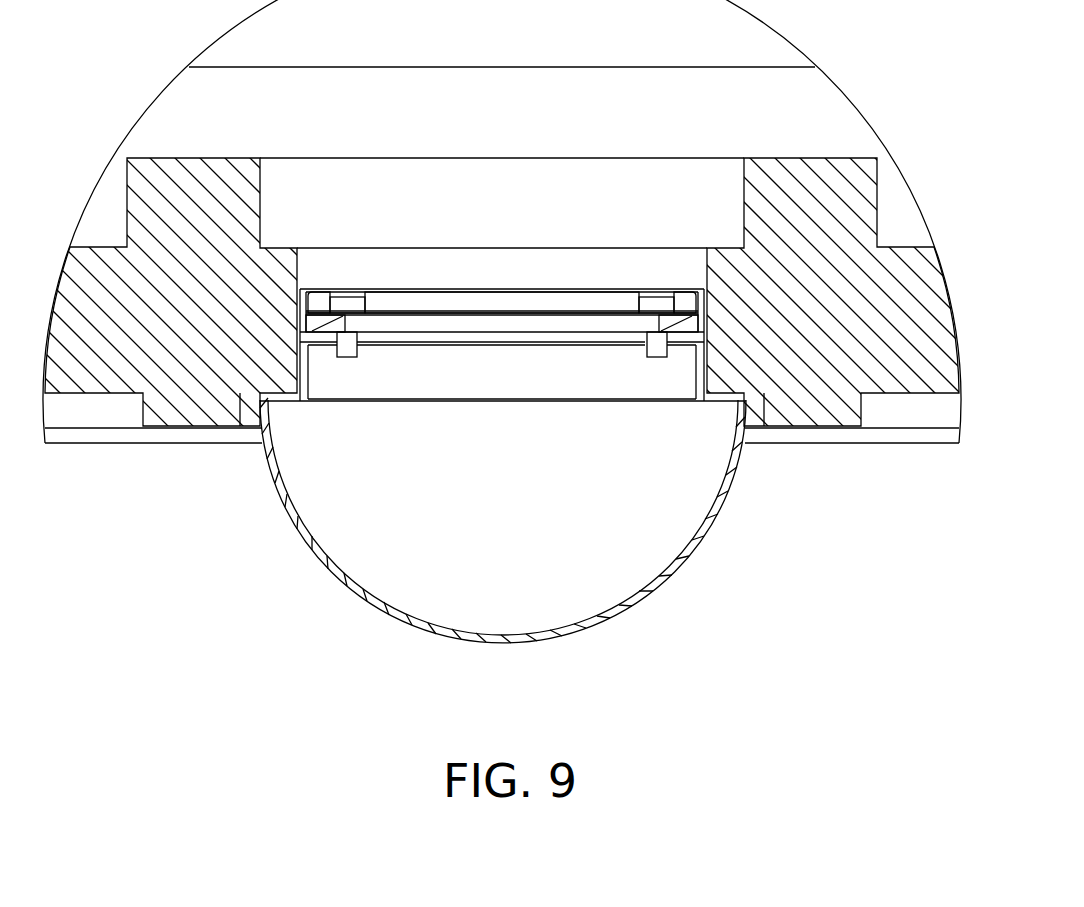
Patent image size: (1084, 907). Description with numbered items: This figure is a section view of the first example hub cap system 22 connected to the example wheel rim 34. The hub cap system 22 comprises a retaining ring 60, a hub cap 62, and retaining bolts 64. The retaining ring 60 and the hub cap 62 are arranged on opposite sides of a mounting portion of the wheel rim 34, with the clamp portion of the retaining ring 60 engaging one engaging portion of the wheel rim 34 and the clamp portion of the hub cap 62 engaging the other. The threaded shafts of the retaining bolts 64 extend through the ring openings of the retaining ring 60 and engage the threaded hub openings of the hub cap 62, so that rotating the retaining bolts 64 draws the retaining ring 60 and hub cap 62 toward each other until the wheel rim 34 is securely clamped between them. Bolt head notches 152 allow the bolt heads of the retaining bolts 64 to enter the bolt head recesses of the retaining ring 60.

The hub cap system 22 is at (267, 550).
The wheel rim 34 is at (818, 152).
The retaining ring 60 is at (490, 303).
The hub cap 62 is at (693, 533).
The retaining bolts 64 is at (360, 300).
The bolt head notches 152 is at (342, 290).